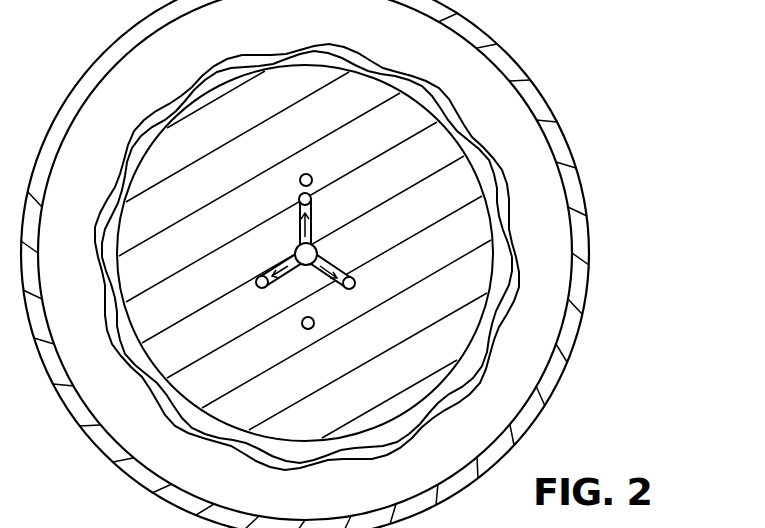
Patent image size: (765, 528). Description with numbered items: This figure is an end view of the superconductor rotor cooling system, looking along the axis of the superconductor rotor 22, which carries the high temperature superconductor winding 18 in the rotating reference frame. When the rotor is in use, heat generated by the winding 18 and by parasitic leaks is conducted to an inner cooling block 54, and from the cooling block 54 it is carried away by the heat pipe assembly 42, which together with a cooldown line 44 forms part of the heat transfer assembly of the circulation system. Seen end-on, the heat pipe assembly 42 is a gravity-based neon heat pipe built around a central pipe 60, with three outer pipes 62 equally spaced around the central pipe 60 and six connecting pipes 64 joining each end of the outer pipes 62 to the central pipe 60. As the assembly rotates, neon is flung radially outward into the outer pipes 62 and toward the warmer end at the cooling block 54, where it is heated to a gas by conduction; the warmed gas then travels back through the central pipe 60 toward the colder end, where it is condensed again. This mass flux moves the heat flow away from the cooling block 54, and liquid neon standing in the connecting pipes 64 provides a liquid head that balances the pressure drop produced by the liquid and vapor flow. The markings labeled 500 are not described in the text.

The high temperature superconductor winding 18 is at (520, 247).
The superconductor rotor 22 is at (507, 63).
The heat pipe assembly 42 is at (319, 255).
The cooldown line 44 is at (302, 176).
The inner cooling block 54 is at (452, 348).
The central pipe 60 is at (315, 238).
The outer pipes 62 is at (297, 197).
The connecting pipes 64 is at (278, 262).
The markers 500 is at (270, 310).